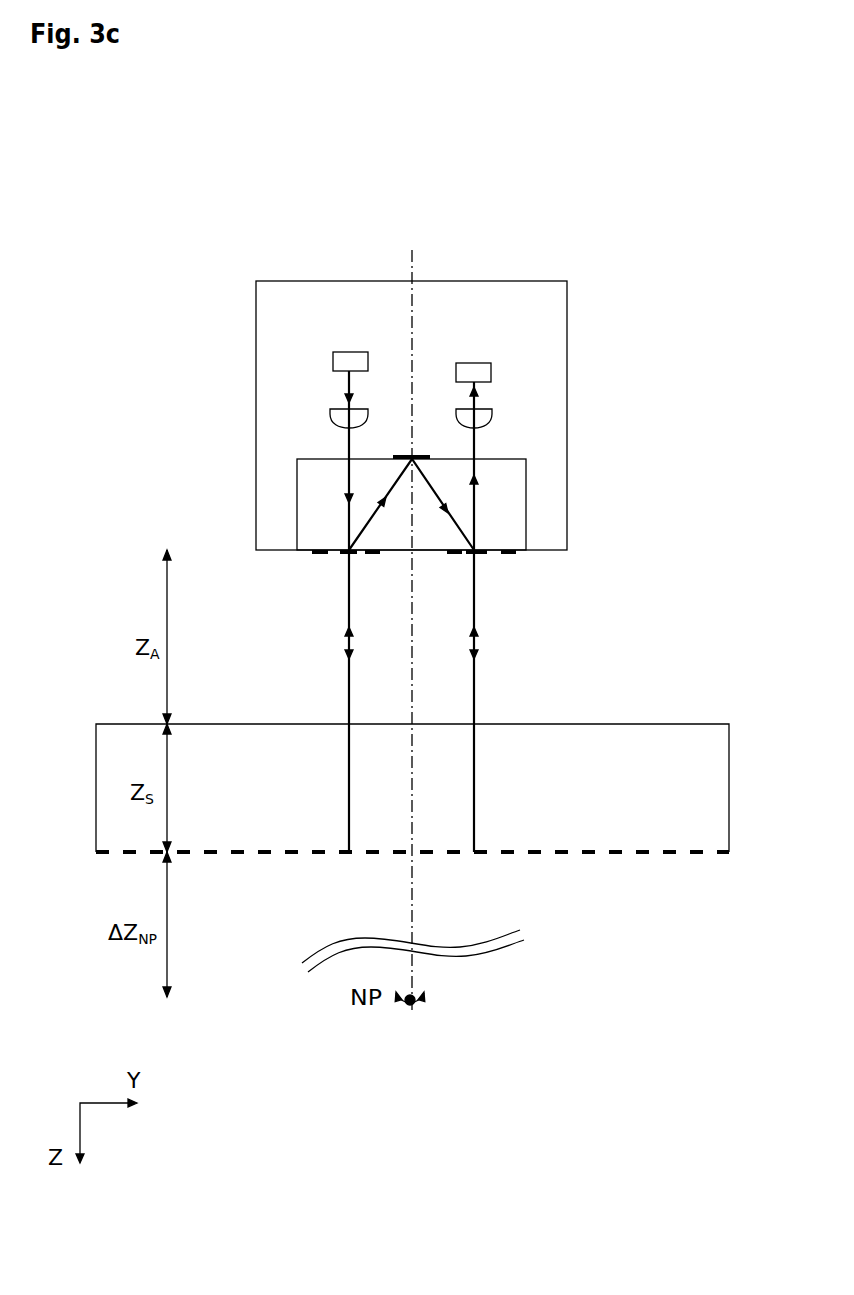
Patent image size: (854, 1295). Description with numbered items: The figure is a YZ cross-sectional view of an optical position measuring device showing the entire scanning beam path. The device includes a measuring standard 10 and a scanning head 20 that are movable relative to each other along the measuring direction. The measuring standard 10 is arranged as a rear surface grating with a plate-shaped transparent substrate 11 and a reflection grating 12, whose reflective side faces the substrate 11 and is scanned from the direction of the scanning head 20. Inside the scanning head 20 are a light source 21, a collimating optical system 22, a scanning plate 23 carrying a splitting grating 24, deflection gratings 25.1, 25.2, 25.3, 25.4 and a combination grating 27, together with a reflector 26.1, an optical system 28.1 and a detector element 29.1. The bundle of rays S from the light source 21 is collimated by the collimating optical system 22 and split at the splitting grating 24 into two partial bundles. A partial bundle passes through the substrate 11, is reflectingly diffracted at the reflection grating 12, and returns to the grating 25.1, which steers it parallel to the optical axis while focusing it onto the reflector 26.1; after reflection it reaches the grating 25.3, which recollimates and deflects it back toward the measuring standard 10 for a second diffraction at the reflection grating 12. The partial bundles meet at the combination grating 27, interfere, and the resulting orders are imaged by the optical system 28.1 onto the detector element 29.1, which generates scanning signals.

The measuring standard 10 is at (408, 817).
The substrate 11 is at (717, 817).
The reflection grating 12 is at (667, 857).
The scanning head 20 is at (244, 345).
The light source 21 is at (347, 357).
The bundle of rays S is at (347, 393).
The collimating optical system 22 is at (333, 418).
The scanning plate 23 is at (520, 508).
The splitting grating 24 is at (314, 557).
The grating 25.1 is at (314, 586).
The grating 25.2 is at (306, 604).
The grating 25.3 is at (480, 557).
The grating 25.4 is at (512, 604).
The reflector 26.1 is at (406, 458).
The combination grating 27 is at (525, 586).
The optical system 28.1 is at (490, 415).
The detector element 29.1 is at (490, 372).